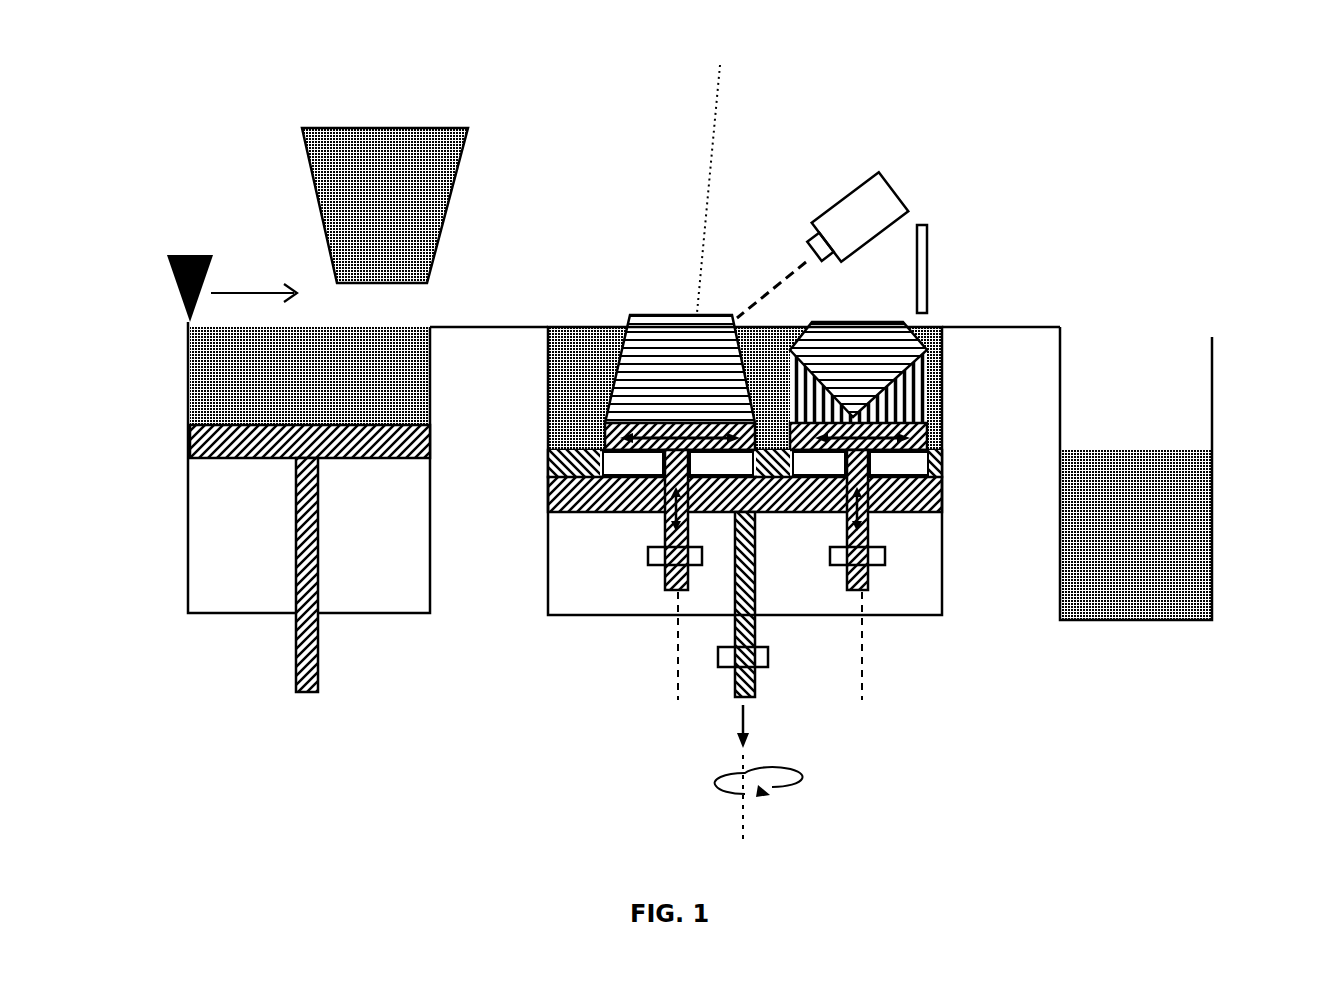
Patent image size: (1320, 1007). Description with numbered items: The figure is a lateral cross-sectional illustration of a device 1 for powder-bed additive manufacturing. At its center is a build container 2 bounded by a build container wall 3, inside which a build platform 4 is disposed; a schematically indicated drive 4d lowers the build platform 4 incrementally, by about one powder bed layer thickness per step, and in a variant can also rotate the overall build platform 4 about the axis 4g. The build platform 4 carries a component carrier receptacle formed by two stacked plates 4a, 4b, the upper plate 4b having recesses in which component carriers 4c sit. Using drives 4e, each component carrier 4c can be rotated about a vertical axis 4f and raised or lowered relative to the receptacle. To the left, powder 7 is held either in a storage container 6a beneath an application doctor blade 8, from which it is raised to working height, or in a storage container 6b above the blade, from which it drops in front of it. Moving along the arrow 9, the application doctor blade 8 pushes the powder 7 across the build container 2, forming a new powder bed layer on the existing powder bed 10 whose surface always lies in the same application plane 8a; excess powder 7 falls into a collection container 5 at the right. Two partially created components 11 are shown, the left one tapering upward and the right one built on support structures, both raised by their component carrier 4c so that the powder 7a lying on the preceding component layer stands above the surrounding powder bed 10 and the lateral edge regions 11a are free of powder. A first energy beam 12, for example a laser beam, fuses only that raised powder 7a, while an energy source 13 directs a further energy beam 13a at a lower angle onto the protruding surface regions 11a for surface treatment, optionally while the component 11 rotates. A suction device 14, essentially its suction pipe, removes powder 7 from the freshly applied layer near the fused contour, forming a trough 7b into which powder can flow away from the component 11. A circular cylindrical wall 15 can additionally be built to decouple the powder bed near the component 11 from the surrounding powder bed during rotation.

The device 1 is at (593, 145).
The build container 2 is at (542, 654).
The build container wall 3 is at (608, 616).
The build platform 4 is at (532, 427).
The plate 4a is at (942, 490).
The plate 4b is at (945, 467).
The component carrier 4c is at (605, 440).
The drive 4d is at (768, 656).
The drives 4e is at (648, 553).
The vertical axis 4f is at (670, 672).
The axis 4g is at (752, 815).
The collection container 5 is at (1215, 410).
The storage container 6a is at (183, 516).
The storage container 6b is at (350, 125).
The powder 7 is at (355, 170).
The powder 7a is at (658, 316).
The trough 7b is at (944, 308).
The application doctor blade 8 is at (172, 276).
The application plane 8a is at (472, 315).
The arrow 9 is at (262, 252).
The powder bed 10 is at (552, 360).
The component 11 is at (766, 369).
The lateral edge regions 11a is at (611, 310).
The first energy beam 12 is at (722, 88).
The energy source 13 is at (900, 186).
The further energy beam 13a is at (803, 240).
The suction device 14 is at (928, 234).
The circular cylindrical wall 15 is at (593, 343).